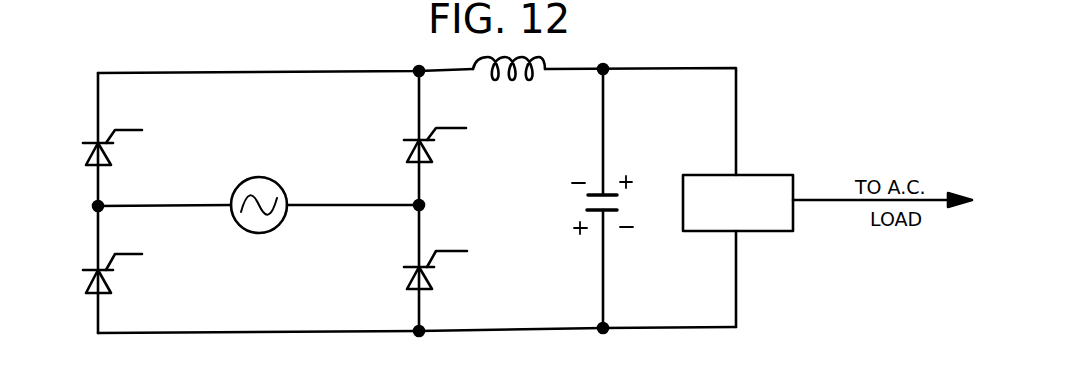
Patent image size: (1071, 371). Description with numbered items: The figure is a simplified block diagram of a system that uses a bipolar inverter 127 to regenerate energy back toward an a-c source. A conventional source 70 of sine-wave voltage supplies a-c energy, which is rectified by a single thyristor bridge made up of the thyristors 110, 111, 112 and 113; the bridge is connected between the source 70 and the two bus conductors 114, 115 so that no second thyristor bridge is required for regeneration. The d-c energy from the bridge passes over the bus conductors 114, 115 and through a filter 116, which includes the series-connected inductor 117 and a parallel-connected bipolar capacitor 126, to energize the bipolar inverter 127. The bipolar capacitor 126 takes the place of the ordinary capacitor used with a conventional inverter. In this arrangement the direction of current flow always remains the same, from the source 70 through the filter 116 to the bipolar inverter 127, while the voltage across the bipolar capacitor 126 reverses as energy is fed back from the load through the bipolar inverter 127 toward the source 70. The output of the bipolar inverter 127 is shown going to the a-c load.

The source 70 is at (259, 193).
The thyristor 110 is at (121, 151).
The thyristor 111 is at (122, 276).
The thyristor 112 is at (414, 149).
The thyristor 113 is at (416, 274).
The bus conductor 114 is at (437, 70).
The bus conductor 115 is at (371, 332).
The filter 116 is at (566, 152).
The inductor 117 is at (509, 82).
The bipolar capacitor 126 is at (584, 198).
The bipolar inverter 127 is at (738, 191).